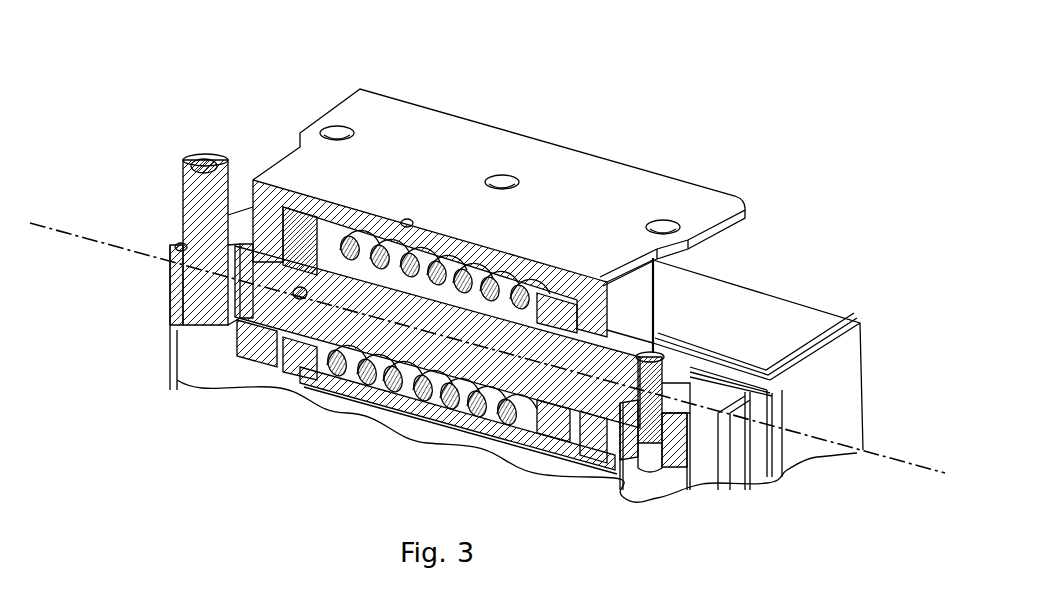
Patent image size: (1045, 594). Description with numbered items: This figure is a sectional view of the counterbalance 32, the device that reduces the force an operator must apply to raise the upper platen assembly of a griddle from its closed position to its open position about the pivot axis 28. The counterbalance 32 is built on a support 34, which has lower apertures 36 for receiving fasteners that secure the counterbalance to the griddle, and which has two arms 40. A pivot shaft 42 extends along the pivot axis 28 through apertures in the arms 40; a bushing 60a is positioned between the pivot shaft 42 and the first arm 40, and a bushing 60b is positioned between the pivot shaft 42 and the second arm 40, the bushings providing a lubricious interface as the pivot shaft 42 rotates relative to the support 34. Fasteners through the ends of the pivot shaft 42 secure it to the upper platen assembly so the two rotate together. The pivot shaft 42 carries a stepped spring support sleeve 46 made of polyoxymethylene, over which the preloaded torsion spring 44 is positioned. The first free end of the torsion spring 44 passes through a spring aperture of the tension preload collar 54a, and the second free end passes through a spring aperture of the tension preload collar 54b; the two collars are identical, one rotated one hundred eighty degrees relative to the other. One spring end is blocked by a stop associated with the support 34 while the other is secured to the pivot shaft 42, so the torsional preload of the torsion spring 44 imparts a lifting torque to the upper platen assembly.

The pivot axis 28 is at (887, 453).
The counterbalance 32 is at (672, 291).
The support 34 is at (593, 180).
The lower apertures 36 is at (337, 128).
The arms 40 is at (265, 350).
The pivot shaft 42 is at (390, 335).
The torsion spring 44 is at (345, 372).
The spring support sleeve 46 is at (440, 368).
The tension preload collar 54a is at (553, 437).
The tension preload collar 54b is at (310, 352).
The bushing 60a is at (662, 354).
The bushing 60b is at (252, 190).